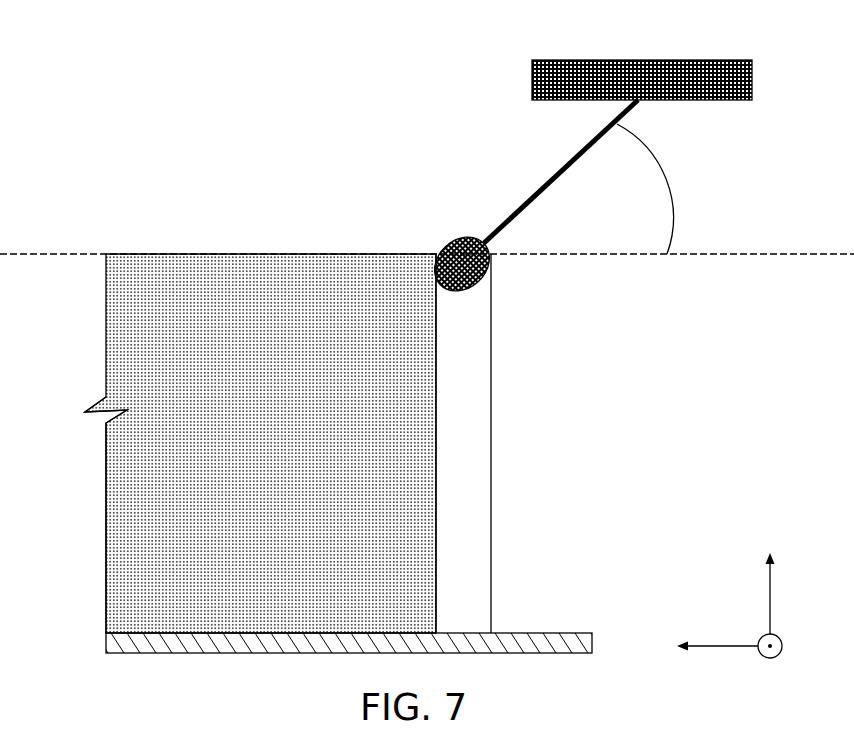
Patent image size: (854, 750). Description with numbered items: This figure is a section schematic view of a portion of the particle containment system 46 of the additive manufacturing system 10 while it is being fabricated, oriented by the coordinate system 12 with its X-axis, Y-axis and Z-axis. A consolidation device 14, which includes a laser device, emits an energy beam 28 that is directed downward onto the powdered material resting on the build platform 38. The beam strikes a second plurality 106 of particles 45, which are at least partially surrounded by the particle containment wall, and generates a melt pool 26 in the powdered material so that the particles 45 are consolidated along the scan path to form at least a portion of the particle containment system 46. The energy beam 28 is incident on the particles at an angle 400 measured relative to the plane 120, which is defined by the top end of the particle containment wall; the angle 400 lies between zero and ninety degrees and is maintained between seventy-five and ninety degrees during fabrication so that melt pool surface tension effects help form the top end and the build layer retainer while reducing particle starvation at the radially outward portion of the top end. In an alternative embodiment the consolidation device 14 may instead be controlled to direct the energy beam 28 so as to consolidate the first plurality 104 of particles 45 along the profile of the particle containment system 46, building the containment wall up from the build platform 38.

The additive manufacturing system 10 is at (248, 58).
The particle containment system 46 is at (190, 118).
The plane 120 is at (47, 253).
The consolidation device 14 is at (531, 77).
The energy beam 28 is at (557, 172).
The melt pool 26 is at (450, 239).
The angle 400 is at (664, 172).
The particles 45 is at (127, 373).
The first plurality of particles 104 is at (147, 443).
The second plurality of particles 106 is at (480, 508).
The build platform 38 is at (533, 632).
The coordinate system 12 is at (774, 506).